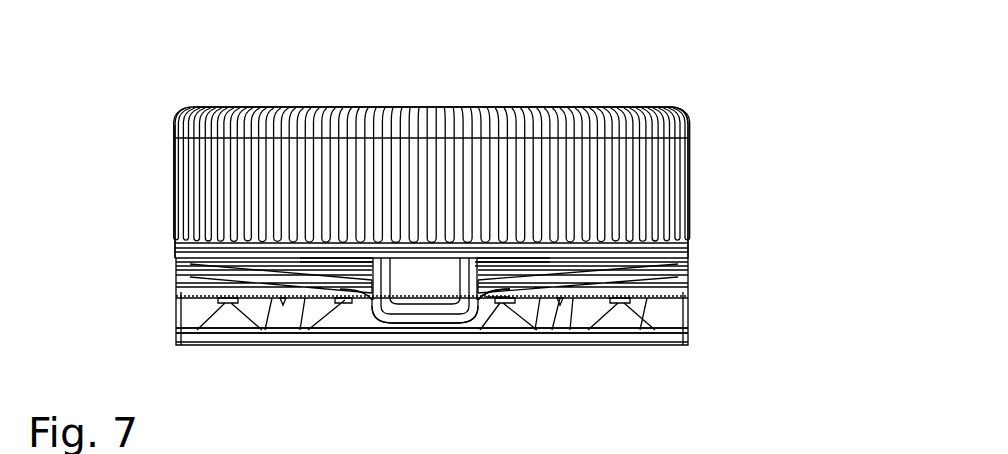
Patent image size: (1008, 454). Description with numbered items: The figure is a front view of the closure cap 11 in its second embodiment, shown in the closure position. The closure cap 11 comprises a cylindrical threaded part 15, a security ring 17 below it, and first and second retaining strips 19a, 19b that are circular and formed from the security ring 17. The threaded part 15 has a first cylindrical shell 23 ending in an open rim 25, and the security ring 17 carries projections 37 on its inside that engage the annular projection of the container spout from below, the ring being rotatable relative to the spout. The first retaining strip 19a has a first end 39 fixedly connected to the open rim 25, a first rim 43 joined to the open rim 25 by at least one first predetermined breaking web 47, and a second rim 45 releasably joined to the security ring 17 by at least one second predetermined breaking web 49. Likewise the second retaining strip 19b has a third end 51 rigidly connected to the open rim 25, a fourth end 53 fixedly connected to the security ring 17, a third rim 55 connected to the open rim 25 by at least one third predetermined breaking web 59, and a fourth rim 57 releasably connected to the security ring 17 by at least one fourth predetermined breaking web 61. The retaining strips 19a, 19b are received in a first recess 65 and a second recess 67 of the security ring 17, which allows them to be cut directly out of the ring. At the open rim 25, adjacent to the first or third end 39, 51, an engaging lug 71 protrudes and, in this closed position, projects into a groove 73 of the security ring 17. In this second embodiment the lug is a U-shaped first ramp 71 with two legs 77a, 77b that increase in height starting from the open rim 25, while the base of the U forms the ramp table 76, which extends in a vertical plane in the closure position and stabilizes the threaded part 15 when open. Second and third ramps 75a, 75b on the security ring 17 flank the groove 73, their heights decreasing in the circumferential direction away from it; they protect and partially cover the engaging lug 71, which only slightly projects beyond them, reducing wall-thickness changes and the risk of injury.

The closure cap 11 is at (652, 104).
The threaded part 15 is at (690, 243).
The security ring 17 is at (688, 320).
The first retaining strip 19a is at (178, 280).
The second retaining strip 19b is at (688, 282).
The first cylindrical shell 23 is at (688, 118).
The open rim 25 is at (205, 107).
The projections 37 is at (595, 320).
The first end 39 is at (322, 330).
The first rim 43 is at (178, 256).
The second rim 45 is at (228, 303).
The first predetermined breaking web 47 is at (176, 205).
The second predetermined breaking web 49 is at (178, 318).
The third end 51 is at (498, 303).
The fourth end 53 is at (688, 275).
The third rim 55 is at (688, 265).
The fourth rim 57 is at (648, 320).
The third predetermined breaking web 59 is at (690, 178).
The fourth predetermined breaking web 61 is at (487, 300).
The first recess 65 is at (280, 303).
The second recess 67 is at (560, 310).
The engaging lug 71 is at (418, 282).
The groove 73 is at (405, 330).
The second ramp 75a is at (298, 258).
The third ramp 75b is at (478, 291).
The ramp table 76 is at (445, 330).
The first leg 77a is at (378, 282).
The second leg 77b is at (458, 285).